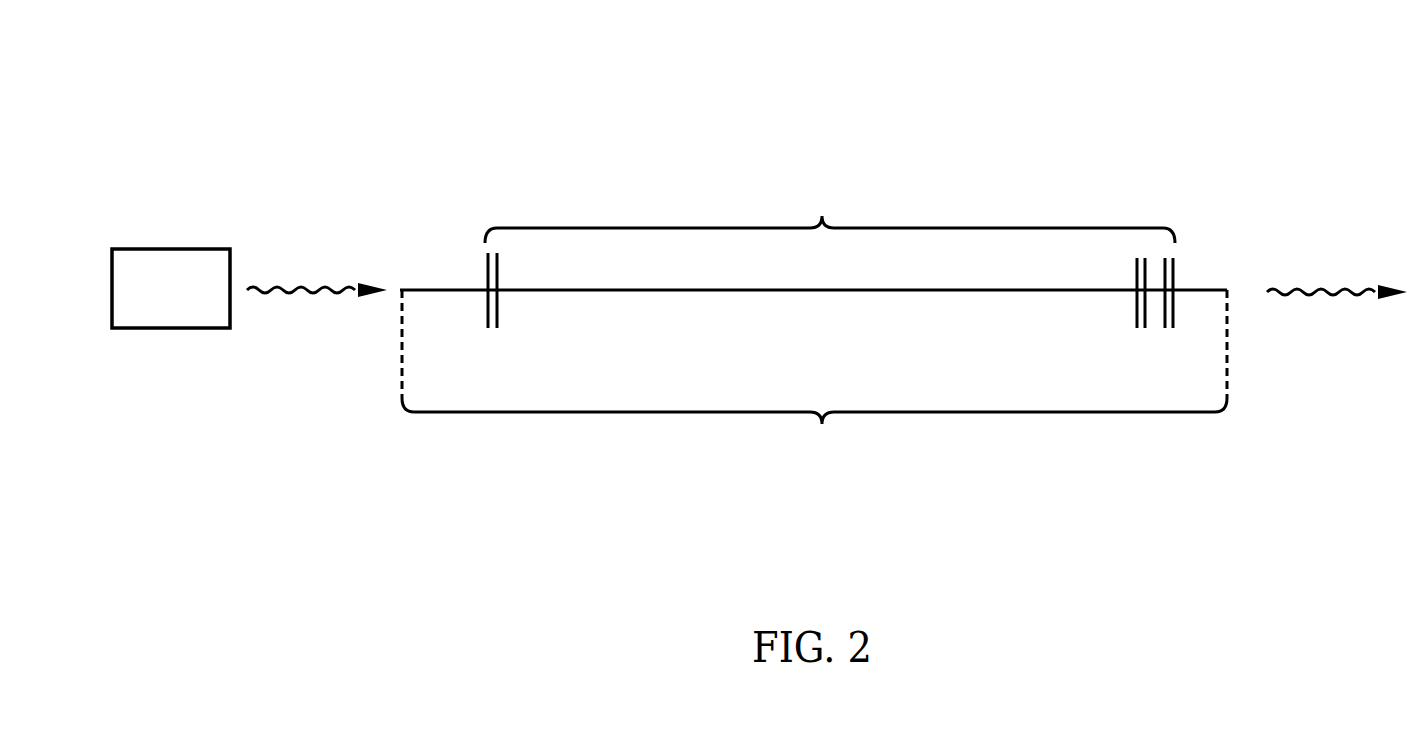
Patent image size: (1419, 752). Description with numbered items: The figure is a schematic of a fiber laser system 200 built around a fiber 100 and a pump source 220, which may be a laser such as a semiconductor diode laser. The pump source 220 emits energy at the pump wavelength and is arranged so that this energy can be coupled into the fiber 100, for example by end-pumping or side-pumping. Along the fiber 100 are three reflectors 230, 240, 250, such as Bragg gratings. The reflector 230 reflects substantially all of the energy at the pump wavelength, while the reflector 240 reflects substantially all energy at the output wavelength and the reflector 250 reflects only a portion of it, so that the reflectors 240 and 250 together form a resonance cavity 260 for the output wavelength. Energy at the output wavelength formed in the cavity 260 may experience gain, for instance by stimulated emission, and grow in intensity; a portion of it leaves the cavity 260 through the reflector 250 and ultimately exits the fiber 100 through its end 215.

The fiber 100 is at (822, 424).
The fiber laser system 200 is at (1248, 92).
The end 215 is at (1246, 295).
The pump source 220 is at (189, 302).
The reflector 230 is at (1137, 308).
The reflector 240 is at (488, 307).
The reflector 250 is at (1175, 308).
The resonance cavity 260 is at (822, 216).